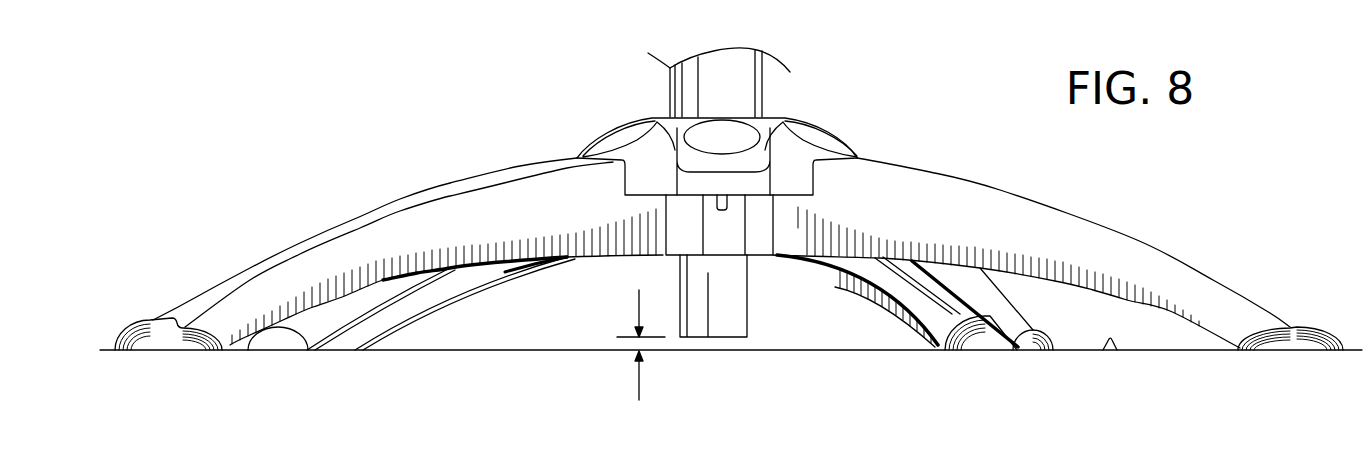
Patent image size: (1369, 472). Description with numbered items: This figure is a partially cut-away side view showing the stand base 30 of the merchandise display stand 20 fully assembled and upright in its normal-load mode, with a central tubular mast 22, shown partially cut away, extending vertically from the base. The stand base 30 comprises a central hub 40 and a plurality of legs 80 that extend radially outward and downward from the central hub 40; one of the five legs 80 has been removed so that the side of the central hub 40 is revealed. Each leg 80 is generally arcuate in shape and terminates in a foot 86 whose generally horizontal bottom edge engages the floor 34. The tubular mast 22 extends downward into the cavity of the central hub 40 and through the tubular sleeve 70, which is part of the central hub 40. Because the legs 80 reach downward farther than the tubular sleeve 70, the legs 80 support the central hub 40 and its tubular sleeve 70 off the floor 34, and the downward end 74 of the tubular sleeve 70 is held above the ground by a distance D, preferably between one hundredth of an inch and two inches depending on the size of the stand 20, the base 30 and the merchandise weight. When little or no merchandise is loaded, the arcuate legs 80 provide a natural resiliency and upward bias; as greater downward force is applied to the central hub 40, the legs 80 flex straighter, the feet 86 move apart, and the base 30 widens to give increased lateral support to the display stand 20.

The merchandise display stand 20 is at (328, 124).
The tubular mast 22 is at (703, 88).
The stand base 30 is at (890, 137).
The floor 34 is at (1110, 352).
The central hub 40 is at (600, 130).
The tubular sleeve 70 is at (668, 303).
The downward end 74 is at (738, 338).
The legs 80 is at (330, 226).
The feet 86 is at (160, 332).